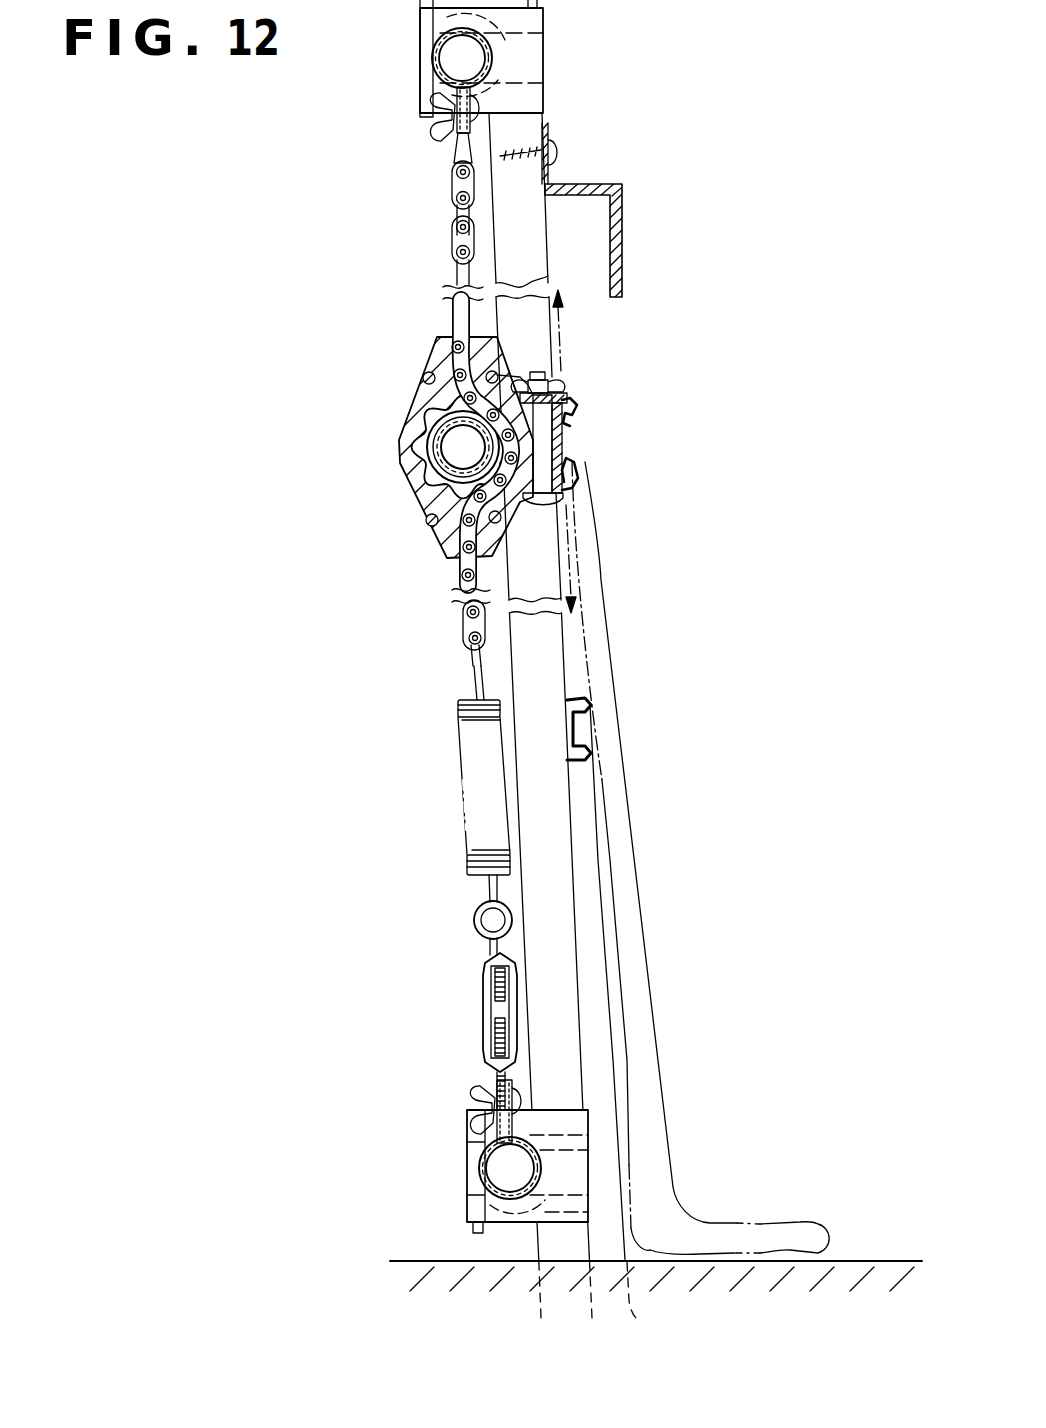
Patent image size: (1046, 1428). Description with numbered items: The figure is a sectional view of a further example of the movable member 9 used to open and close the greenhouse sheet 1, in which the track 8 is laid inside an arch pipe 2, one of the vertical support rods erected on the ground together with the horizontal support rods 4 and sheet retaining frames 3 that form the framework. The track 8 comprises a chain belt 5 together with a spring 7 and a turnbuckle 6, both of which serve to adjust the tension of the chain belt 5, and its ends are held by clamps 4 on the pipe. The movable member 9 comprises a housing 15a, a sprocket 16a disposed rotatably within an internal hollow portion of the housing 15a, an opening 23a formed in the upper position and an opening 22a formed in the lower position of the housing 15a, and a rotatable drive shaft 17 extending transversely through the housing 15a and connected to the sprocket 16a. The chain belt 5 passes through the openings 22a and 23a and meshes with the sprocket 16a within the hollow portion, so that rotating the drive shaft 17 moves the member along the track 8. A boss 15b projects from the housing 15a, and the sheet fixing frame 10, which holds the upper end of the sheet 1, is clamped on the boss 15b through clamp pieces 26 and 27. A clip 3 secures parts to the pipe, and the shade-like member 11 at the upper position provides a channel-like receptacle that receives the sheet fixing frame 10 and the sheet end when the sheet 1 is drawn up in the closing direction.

The sheet 1 is at (630, 843).
The arch pipe 2 is at (558, 905).
The sheet retaining frame 3 is at (590, 705).
The horizontal support rod 4 is at (434, 67).
The chain belt 5 is at (470, 640).
The turnbuckle 6 is at (483, 1012).
The spring 7 is at (467, 868).
The track 8 is at (460, 797).
The movable member 9 is at (448, 460).
The sheet fixing frame 10 is at (580, 438).
The shade-like member 11 is at (620, 247).
The housing 15a is at (417, 385).
The boss 15b is at (570, 402).
The sprocket 16a is at (416, 447).
The drive shaft 17 is at (428, 487).
The opening 22a is at (460, 560).
The opening 23a is at (447, 337).
The clamp piece 26 is at (572, 398).
The clamp piece 27 is at (568, 488).